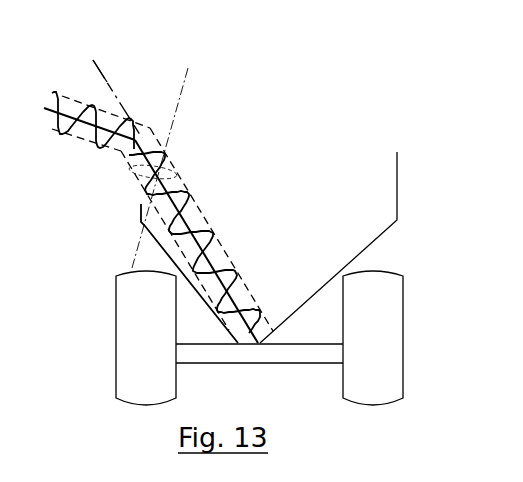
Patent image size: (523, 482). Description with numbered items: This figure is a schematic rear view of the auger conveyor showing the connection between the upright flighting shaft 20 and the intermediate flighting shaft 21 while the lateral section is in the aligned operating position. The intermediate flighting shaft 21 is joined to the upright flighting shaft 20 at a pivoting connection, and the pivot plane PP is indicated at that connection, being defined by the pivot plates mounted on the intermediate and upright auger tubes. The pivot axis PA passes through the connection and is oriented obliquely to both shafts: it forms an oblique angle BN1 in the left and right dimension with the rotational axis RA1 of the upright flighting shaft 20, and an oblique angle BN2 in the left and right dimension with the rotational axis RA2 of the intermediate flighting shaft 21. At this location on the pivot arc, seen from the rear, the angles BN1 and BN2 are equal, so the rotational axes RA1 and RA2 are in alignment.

The upright flighting shaft 20 is at (188, 213).
The intermediate flighting shaft 21 is at (163, 153).
The oblique angle BN1 is at (143, 243).
The oblique angle BN2 is at (178, 87).
The pivot plane PP is at (163, 173).
The pivot axis PA is at (168, 157).
The rotational axis RA1 is at (107, 76).
The rotational axis RA2 is at (90, 61).